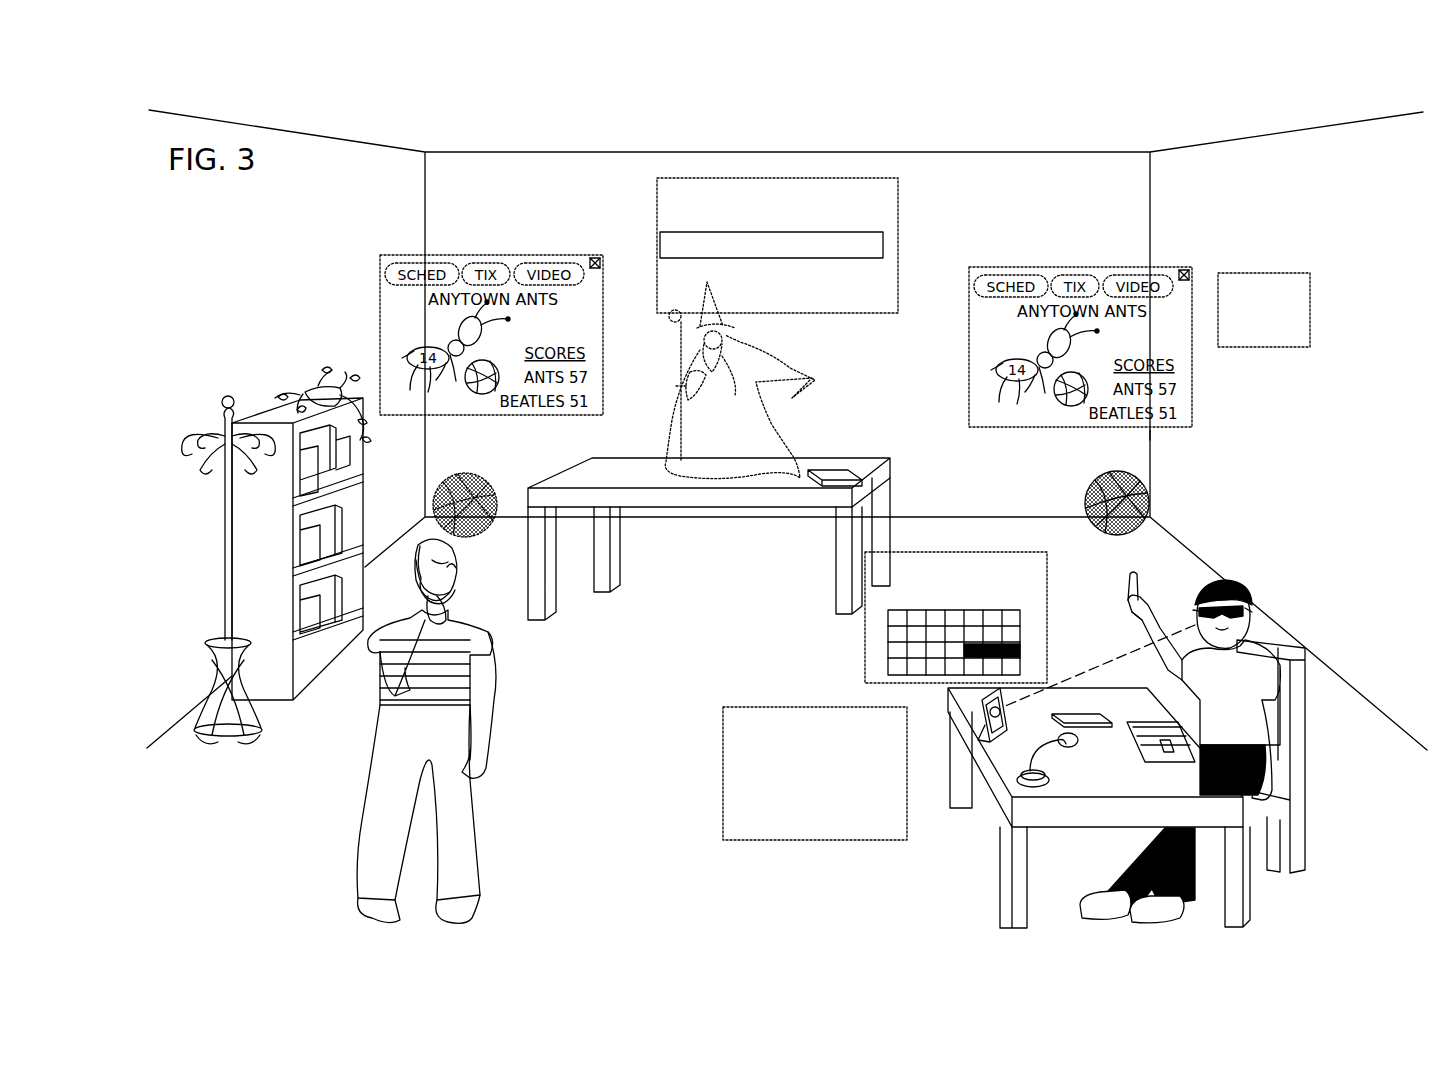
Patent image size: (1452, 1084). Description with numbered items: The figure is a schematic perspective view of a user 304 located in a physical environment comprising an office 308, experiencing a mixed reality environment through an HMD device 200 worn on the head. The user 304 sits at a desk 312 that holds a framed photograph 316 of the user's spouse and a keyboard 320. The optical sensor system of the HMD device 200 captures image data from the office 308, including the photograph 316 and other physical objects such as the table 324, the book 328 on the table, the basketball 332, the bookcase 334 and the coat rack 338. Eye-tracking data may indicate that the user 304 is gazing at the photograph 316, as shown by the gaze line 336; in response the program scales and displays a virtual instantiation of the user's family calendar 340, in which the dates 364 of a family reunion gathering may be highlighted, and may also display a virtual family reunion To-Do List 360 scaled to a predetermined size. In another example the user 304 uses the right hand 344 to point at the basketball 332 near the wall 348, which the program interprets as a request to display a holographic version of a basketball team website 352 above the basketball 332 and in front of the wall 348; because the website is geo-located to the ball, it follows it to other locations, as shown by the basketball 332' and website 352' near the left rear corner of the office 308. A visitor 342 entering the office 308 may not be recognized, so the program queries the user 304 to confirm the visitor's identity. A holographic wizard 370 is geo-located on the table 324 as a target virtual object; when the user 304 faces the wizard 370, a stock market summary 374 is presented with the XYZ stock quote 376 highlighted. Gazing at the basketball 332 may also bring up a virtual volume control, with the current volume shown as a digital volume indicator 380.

The HMD device 200 is at (1247, 622).
The user 304 is at (1290, 756).
The office 308 is at (1012, 172).
The desk 312 is at (1000, 812).
The framed photograph 316 is at (982, 712).
The keyboard 320 is at (1137, 747).
The table 324 is at (795, 455).
The book 328 is at (840, 466).
The basketball 332 is at (1090, 494).
The basketball 332' is at (475, 521).
The bookcase 334 is at (308, 676).
The gaze line 336 is at (1138, 647).
The coat rack 338 is at (255, 738).
The family calendar 340 is at (941, 617).
The visitor 342 is at (480, 704).
The right hand 344 is at (1143, 582).
The wall 348 is at (1131, 440).
The website 352 is at (1080, 334).
The website 352' is at (491, 321).
The To-Do List 360 is at (733, 707).
The dates 364 is at (1020, 648).
The holographic wizard 370 is at (682, 424).
The stock market summary 374 is at (811, 245).
The XYZ stock quote 376 is at (884, 246).
The digital volume indicator 380 is at (1310, 310).